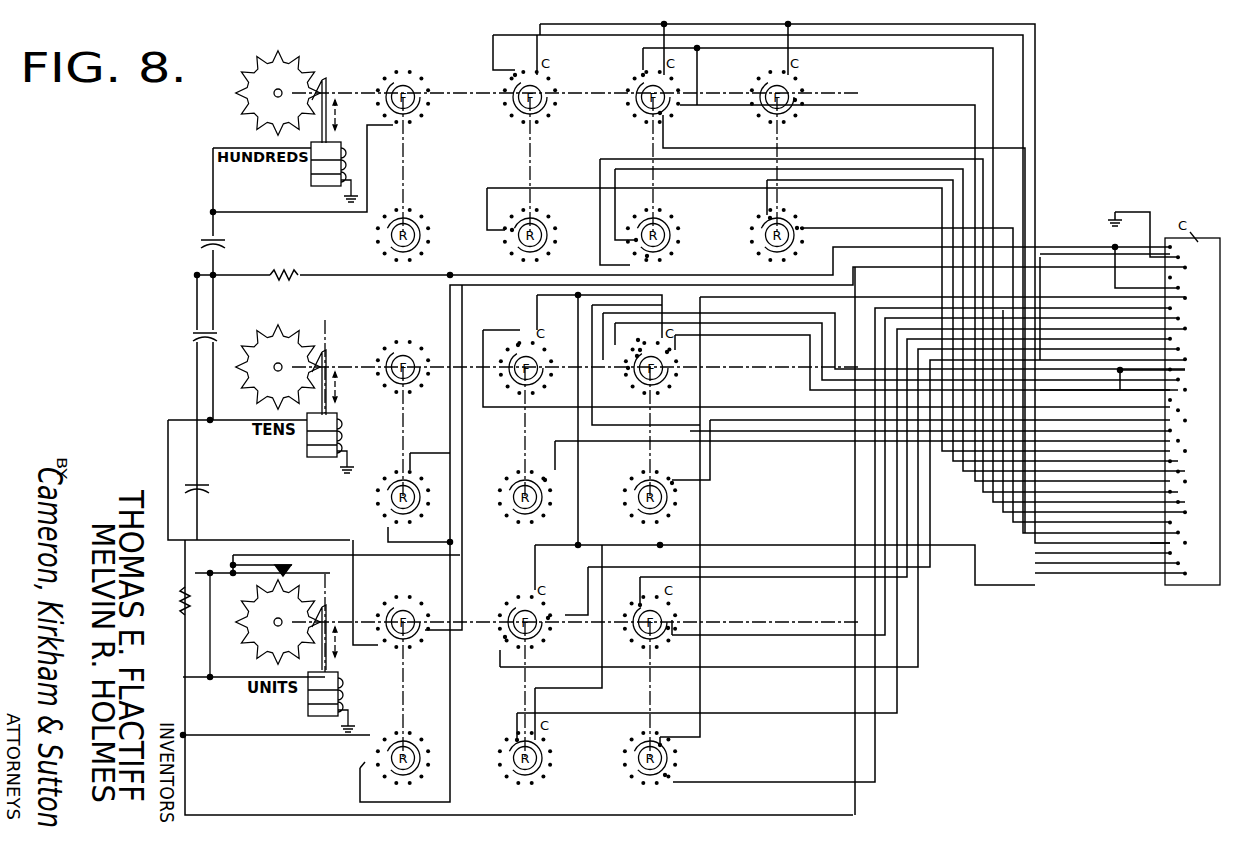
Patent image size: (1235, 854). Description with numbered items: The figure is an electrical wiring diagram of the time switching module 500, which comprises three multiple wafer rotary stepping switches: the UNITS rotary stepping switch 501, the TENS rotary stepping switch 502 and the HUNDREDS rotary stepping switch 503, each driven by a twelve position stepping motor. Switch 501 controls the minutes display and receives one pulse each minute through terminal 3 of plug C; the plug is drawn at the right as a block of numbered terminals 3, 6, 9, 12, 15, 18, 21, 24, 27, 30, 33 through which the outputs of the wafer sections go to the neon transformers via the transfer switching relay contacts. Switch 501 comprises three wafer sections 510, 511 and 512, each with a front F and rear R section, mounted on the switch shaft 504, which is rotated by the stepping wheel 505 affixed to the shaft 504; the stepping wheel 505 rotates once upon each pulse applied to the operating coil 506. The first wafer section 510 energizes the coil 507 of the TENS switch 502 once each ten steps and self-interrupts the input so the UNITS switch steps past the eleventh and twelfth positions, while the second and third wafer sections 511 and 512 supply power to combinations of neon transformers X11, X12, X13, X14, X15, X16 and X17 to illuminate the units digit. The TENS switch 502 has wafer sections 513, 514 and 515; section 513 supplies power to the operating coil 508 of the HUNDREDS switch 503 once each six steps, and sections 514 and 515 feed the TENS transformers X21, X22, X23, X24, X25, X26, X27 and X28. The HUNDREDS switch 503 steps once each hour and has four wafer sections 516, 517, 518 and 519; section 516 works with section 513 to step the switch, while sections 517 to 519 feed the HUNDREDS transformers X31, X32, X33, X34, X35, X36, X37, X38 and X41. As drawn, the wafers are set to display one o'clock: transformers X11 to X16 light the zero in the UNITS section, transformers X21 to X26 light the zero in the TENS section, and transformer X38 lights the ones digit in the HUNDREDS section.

The time switching module 500 is at (1111, 623).
The UNITS rotary stepping switch 501 is at (225, 694).
The TENS rotary stepping switch 502 is at (234, 436).
The HUNDREDS rotary stepping switch 503 is at (232, 113).
The switch shaft 504 is at (288, 613).
The stepping wheel 505 is at (254, 640).
The operating coil 506 is at (339, 688).
The coil of the TENS rotary stepping switch 507 is at (338, 428).
The operating coil of the HUNDREDS stepping switch 508 is at (312, 168).
The first wafer section 510 is at (433, 705).
The second wafer section 511 is at (558, 687).
The third wafer section 512 is at (683, 687).
The wafer section 513 is at (433, 424).
The second wafer section 514 is at (553, 427).
The third wafer section 515 is at (680, 427).
The wafer section 516 is at (433, 159).
The wafer section 517 is at (560, 154).
The wafer section 518 is at (648, 159).
The wafer section 519 is at (773, 144).
The neon transformer X11 is at (660, 745).
The neon transformer X12 is at (505, 637).
The neon transformer X13 is at (668, 628).
The neon transformer X14 is at (665, 775).
The neon transformer X15 is at (640, 605).
The neon transformer X16 is at (517, 740).
The neon transformer X17 is at (548, 618).
The neon transformer X21 is at (628, 368).
The neon transformer X22 is at (640, 350).
The neon transformer X23 is at (675, 350).
The neon transformer X24 is at (637, 356).
The neon transformer X25 is at (519, 345).
The neon transformer X26 is at (680, 485).
The neon transformer X27 is at (640, 341).
The neon transformer X28 is at (552, 470).
The neon transformer X31 is at (512, 230).
The neon transformer X32 is at (636, 241).
The neon transformer X33 is at (770, 218).
The neon transformer X34 is at (796, 100).
The neon transformer X35 is at (647, 257).
The neon transformer X36 is at (645, 76).
The neon transformer X37 is at (520, 78).
The neon transformer X38 is at (798, 228).
The neon transformer X41 is at (660, 115).
The terminal of plug C 3 is at (1194, 267).
The terminal of plug C 6 is at (1194, 298).
The terminal of plug C 9 is at (1194, 328).
The terminal of plug C 12 is at (1197, 359).
The terminal of plug C 15 is at (1197, 389).
The terminal of plug C 18 is at (1197, 420).
The terminal of plug C 21 is at (1197, 451).
The terminal of plug C 24 is at (1197, 481).
The terminal of plug C 27 is at (1197, 512).
The terminal of plug C 30 is at (1197, 542).
The terminal of plug C 33 is at (1197, 573).